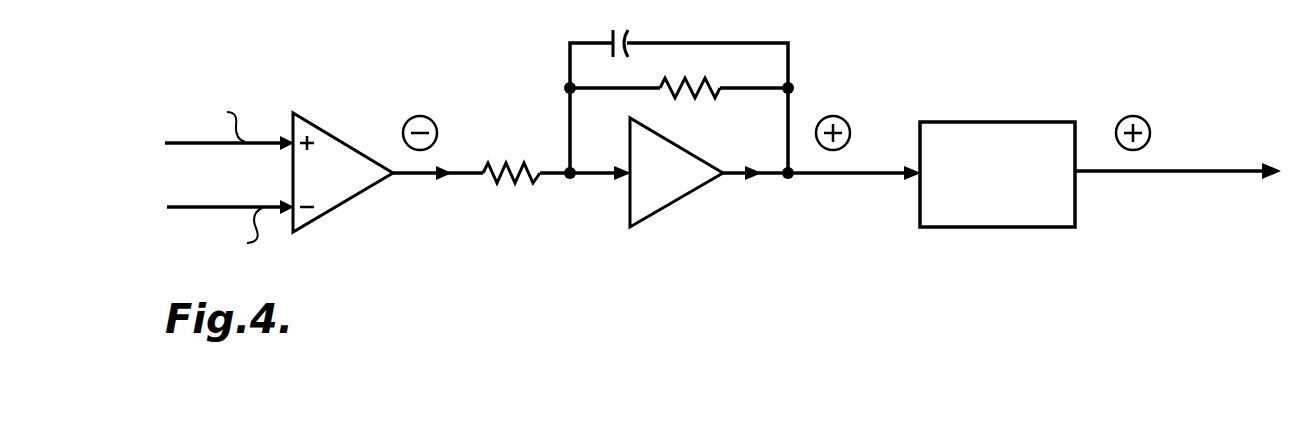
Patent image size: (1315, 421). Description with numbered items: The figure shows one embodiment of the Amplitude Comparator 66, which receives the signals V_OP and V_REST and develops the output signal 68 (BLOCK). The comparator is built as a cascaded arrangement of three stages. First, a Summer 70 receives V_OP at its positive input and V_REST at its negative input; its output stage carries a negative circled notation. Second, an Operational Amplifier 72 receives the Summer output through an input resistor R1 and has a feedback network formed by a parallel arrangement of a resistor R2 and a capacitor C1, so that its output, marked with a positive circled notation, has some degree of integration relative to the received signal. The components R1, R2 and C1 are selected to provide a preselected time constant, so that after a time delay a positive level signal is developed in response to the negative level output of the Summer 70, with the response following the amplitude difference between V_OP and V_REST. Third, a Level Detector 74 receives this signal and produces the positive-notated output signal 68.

The Amplitude Comparator 66 is at (1117, 91).
The output signal (BLOCK) 68 is at (1162, 169).
The Summer (SUM) 70 is at (340, 205).
The Operational Amplifier (OP AMP) 72 is at (673, 205).
The Level Detector 74 is at (962, 121).
The input resistor R1 is at (507, 187).
The feedback resistor R2 is at (704, 80).
The feedback capacitor C1 is at (619, 63).